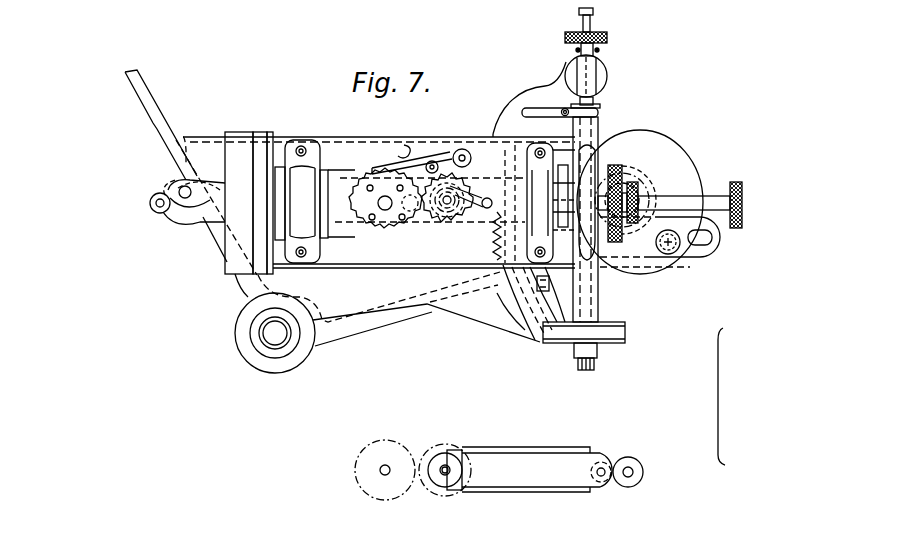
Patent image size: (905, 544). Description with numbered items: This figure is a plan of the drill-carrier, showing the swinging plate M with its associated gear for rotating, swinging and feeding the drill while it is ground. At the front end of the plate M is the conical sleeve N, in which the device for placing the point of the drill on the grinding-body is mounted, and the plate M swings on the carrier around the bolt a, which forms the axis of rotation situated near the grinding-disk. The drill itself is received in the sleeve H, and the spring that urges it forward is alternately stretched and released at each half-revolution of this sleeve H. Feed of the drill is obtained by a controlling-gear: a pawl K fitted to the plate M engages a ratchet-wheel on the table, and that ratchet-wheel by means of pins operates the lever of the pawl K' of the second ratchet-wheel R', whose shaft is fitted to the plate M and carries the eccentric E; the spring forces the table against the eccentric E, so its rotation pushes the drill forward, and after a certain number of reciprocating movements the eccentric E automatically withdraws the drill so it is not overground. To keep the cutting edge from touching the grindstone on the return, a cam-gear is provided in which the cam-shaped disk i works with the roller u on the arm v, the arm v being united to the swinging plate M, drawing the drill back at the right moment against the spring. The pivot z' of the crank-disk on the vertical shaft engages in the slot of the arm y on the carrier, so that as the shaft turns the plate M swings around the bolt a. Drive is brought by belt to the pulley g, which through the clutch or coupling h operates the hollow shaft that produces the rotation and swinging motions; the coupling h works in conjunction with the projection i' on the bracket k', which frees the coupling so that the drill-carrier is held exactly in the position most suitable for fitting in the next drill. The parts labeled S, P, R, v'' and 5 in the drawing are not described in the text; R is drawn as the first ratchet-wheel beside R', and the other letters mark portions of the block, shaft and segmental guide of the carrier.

The swinging plate M is at (379, 202).
The conical sleeve N is at (158, 195).
The bolt a is at (186, 204).
The support block S is at (239, 191).
The plate P is at (253, 133).
The sleeve H is at (352, 225).
The ratchet gear R is at (385, 334).
The second ratchet-wheel R' is at (446, 343).
The pawl K is at (412, 144).
The eccentric E is at (455, 152).
The pawl K' is at (475, 149).
The bracket k' is at (529, 99).
The projection i' is at (594, 165).
The clutch-coupling h is at (600, 112).
The roller u is at (622, 173).
The cam-shaped disk i is at (633, 328).
The adjusting screw shaft v'' is at (690, 202).
The arm y is at (702, 262).
The pivot z' is at (668, 267).
The pulley g is at (625, 336).
The curved guide 5 is at (505, 337).
The arm v is at (529, 469).